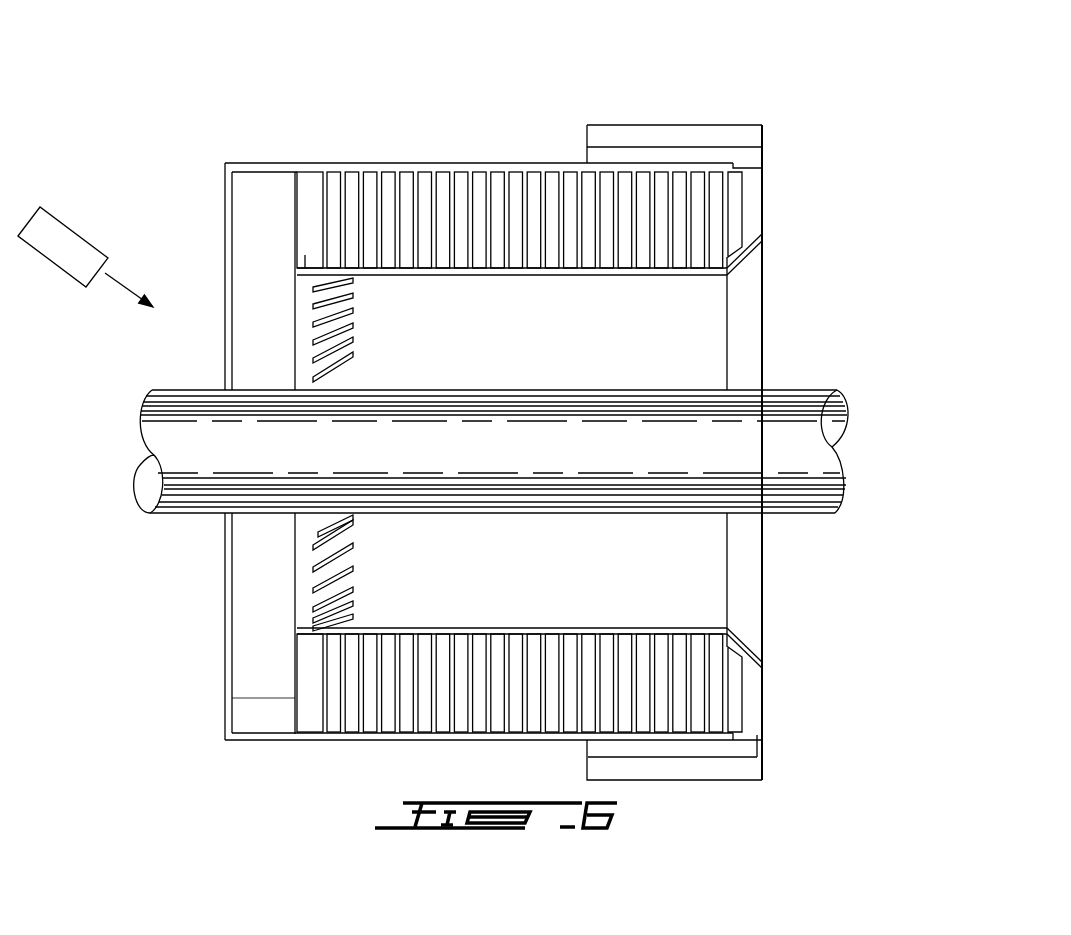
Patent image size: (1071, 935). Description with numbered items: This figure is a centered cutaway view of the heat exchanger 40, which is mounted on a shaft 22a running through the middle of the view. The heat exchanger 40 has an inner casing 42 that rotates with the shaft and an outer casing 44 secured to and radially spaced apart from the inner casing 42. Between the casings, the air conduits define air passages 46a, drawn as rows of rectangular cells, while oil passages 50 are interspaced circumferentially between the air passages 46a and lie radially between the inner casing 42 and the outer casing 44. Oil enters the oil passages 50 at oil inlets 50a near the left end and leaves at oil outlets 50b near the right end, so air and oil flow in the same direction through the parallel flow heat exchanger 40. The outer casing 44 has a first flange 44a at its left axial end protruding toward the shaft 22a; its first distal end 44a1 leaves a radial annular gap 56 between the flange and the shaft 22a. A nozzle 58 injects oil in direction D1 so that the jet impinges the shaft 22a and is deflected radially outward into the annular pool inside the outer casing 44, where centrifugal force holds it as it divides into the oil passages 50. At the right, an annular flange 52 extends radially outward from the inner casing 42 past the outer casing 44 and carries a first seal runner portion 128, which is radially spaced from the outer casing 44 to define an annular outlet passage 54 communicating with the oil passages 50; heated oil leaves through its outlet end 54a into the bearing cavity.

The shaft 22a is at (800, 495).
The heat exchanger 40 is at (828, 86).
The inner casing 42 is at (582, 278).
The outer casing 44 is at (483, 163).
The first flange 44a is at (225, 205).
The first distal end 44a1 is at (225, 640).
The air passages 46a is at (333, 208).
The oil passages 50 is at (350, 233).
The oil inlets 50a is at (284, 240).
The oil outlets 50b is at (748, 167).
The annular flange 52 is at (763, 197).
The annular outlet passage 54 is at (648, 150).
The outlet end 54a is at (588, 152).
The first seal runner portion 128 is at (727, 132).
The radial annular gap 56 is at (210, 355).
The nozzle 58 is at (55, 232).
The direction D1 is at (128, 288).